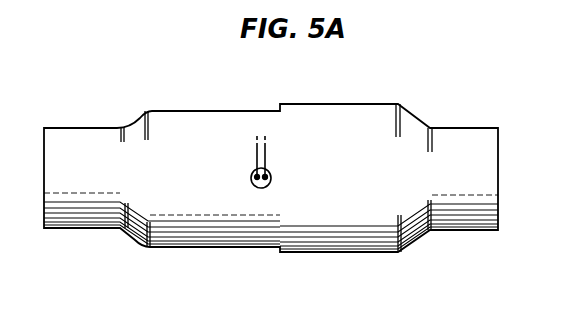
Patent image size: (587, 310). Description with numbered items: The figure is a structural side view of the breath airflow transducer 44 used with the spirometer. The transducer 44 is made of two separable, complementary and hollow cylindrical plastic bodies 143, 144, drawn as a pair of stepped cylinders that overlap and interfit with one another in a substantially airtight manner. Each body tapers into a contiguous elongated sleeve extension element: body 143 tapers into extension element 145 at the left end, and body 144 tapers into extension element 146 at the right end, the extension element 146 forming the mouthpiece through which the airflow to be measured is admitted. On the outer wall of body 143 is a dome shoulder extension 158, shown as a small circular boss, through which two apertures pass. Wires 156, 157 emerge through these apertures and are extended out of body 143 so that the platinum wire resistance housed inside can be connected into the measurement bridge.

The airflow transducer 44 is at (295, 88).
The cylindrical plastic body 143 is at (170, 107).
The cylindrical plastic body 144 is at (350, 104).
The elongated sleeve extension element 145 is at (66, 122).
The elongated sleeve extension element 146 is at (464, 123).
The wire 156 is at (254, 157).
The wire 157 is at (268, 157).
The dome shoulder extension 158 is at (251, 180).